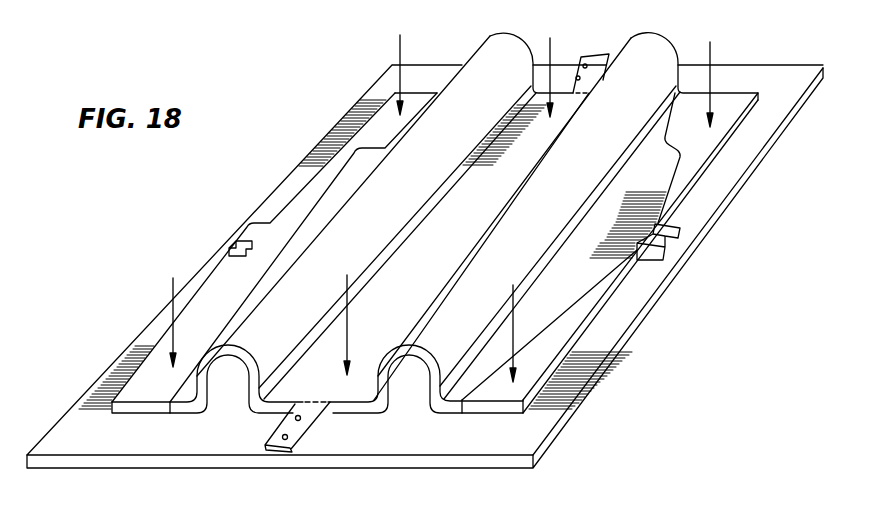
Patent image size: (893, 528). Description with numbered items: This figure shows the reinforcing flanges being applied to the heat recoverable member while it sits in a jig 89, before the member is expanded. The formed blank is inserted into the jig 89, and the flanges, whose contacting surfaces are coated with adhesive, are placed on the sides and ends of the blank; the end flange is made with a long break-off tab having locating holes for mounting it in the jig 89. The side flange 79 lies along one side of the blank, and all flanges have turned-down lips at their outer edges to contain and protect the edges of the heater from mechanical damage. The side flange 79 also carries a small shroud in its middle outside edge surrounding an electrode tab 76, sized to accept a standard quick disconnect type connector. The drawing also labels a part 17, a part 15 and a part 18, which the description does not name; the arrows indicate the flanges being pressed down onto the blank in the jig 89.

The jig 89 is at (755, 75).
The side flange 79 is at (142, 381).
The shaded bonding area right of corrugated strip 17 is at (553, 347).
The electrode tab 76 is at (240, 241).
The locating tab 15 is at (681, 242).
The mounting bracket 18 is at (340, 405).